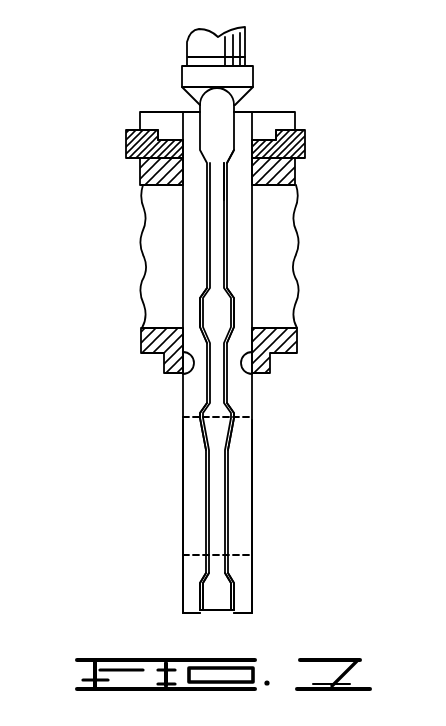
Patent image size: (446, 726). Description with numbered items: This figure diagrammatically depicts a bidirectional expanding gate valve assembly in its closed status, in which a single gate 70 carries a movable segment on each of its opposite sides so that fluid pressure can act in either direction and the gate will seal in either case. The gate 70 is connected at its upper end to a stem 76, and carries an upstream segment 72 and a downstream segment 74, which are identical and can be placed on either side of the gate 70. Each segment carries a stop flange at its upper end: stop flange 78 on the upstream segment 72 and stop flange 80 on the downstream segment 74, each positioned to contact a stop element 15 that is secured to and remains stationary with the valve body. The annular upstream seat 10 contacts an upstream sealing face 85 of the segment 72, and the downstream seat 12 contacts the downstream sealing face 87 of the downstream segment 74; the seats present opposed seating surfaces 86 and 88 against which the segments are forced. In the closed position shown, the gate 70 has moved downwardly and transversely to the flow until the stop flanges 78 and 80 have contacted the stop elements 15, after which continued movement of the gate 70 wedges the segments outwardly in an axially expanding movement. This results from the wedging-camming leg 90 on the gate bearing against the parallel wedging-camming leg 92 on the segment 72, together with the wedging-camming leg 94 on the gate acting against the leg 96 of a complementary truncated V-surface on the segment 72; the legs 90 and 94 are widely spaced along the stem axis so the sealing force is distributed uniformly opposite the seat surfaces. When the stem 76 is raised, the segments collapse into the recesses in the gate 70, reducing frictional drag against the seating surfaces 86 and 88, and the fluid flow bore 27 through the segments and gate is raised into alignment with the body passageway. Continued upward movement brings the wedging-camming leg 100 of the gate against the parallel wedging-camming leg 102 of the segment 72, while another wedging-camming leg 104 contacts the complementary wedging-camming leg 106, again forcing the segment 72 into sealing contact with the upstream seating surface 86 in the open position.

The upstream seat 10 is at (252, 180).
The downstream seat 12 is at (150, 180).
The stop element 15 is at (126, 138).
The fluid flow bore 27 is at (186, 552).
The gate 70 is at (216, 599).
The upstream segment 72 is at (253, 523).
The downstream segment 74 is at (183, 487).
The stem 76 is at (239, 58).
The stop flange 78 is at (263, 117).
The stop flange 80 is at (153, 117).
The upstream sealing face 85 is at (253, 250).
The seating surface 86 is at (248, 376).
The downstream sealing face 87 is at (180, 245).
The seating surface 88 is at (186, 376).
The wedging-camming leg 90 is at (228, 158).
The wedging-camming leg 92 is at (228, 158).
The wedging-camming leg 94 is at (253, 342).
The leg of truncated V-surface 96 is at (228, 337).
The wedging-camming leg 100 is at (198, 418).
The wedging-camming leg 102 is at (230, 405).
The wedging-camming leg 104 is at (200, 586).
The wedging-camming leg 106 is at (228, 580).